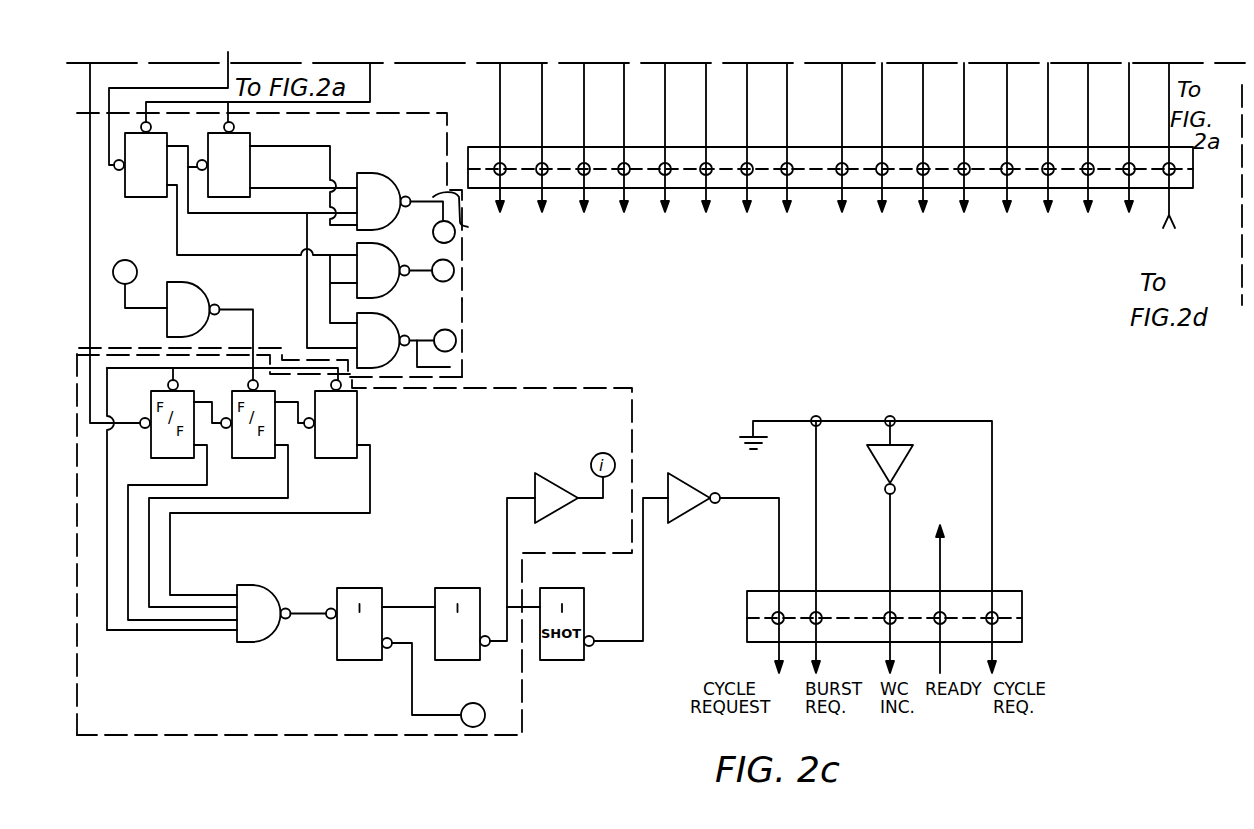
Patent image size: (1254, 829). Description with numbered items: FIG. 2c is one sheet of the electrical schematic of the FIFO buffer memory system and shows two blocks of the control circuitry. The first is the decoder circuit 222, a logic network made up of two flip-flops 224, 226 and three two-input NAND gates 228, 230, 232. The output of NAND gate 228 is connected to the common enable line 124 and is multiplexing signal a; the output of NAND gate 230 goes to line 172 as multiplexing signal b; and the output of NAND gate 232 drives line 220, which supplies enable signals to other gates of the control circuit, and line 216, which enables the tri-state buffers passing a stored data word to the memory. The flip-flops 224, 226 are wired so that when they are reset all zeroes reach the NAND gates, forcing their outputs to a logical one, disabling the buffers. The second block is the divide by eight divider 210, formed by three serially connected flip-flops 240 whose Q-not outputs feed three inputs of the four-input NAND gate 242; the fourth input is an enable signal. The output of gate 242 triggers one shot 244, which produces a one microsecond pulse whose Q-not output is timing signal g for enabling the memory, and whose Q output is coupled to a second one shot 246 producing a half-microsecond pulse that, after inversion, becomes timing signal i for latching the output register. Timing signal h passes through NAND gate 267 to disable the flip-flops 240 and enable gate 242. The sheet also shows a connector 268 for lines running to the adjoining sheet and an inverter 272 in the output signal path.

The common enable line 124 is at (478, 220).
The line 172 is at (421, 225).
The divide by 8 divider 210 is at (552, 388).
The enable line 216 is at (450, 367).
The line 220 is at (463, 318).
The decoder circuit 222 is at (462, 283).
The flip-flop 224 is at (143, 197).
The flip-flop 226 is at (250, 163).
The two-input NAND gate 228 is at (378, 176).
The two-input NAND gate 230 is at (357, 246).
The two-input NAND gate 232 is at (380, 333).
The flip-flops 240 is at (413, 401).
The four-input NAND gate 242 is at (265, 592).
The one shot 244 is at (362, 592).
The second one shot 246 is at (458, 594).
The NAND gate 267 is at (193, 292).
The connector 268 is at (943, 188).
The inverter 272 is at (687, 465).